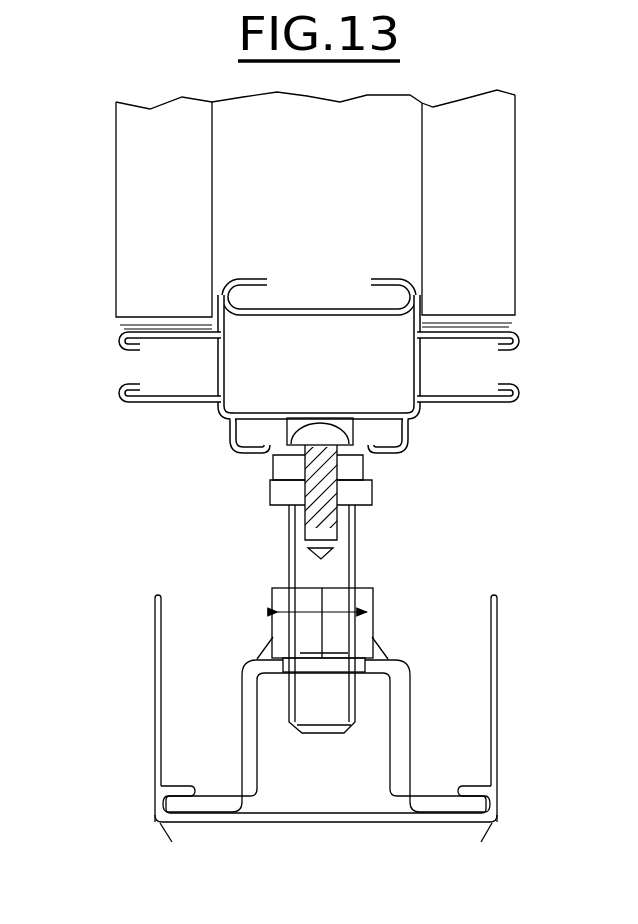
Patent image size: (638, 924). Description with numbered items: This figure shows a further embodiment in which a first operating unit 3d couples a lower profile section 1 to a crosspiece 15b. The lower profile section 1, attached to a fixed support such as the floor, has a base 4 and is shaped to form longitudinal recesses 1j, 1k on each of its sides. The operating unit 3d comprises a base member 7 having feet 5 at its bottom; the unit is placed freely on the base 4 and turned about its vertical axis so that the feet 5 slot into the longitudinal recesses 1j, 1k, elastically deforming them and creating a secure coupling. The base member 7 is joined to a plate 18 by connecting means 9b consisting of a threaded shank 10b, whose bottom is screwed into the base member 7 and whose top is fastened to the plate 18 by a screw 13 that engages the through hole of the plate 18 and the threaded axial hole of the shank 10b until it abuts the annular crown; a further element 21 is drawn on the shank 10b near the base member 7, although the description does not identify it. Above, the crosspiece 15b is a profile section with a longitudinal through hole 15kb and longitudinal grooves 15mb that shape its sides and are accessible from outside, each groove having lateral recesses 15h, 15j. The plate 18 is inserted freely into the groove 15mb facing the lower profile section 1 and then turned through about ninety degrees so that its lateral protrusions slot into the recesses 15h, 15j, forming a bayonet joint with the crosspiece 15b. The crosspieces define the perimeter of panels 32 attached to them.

The panel 32 is at (137, 185).
The longitudinal groove 15mb is at (320, 282).
The lateral recess 15h is at (250, 300).
The lateral recess 15j is at (388, 299).
The longitudinal through hole 15kb is at (360, 372).
The crosspiece 15b is at (143, 369).
The means for connecting 9b is at (262, 551).
The screw 13 is at (273, 472).
The plate 18 is at (360, 470).
The threaded shank 10b is at (345, 555).
The first operating unit 3d is at (437, 577).
The lower nut 21 is at (282, 633).
The base member 7 is at (326, 786).
The feet 5 is at (203, 805).
The lower profile section 1 is at (297, 754).
The longitudinal recess 1j is at (143, 815).
The longitudinal recess 1k is at (515, 821).
The base 4 is at (329, 828).